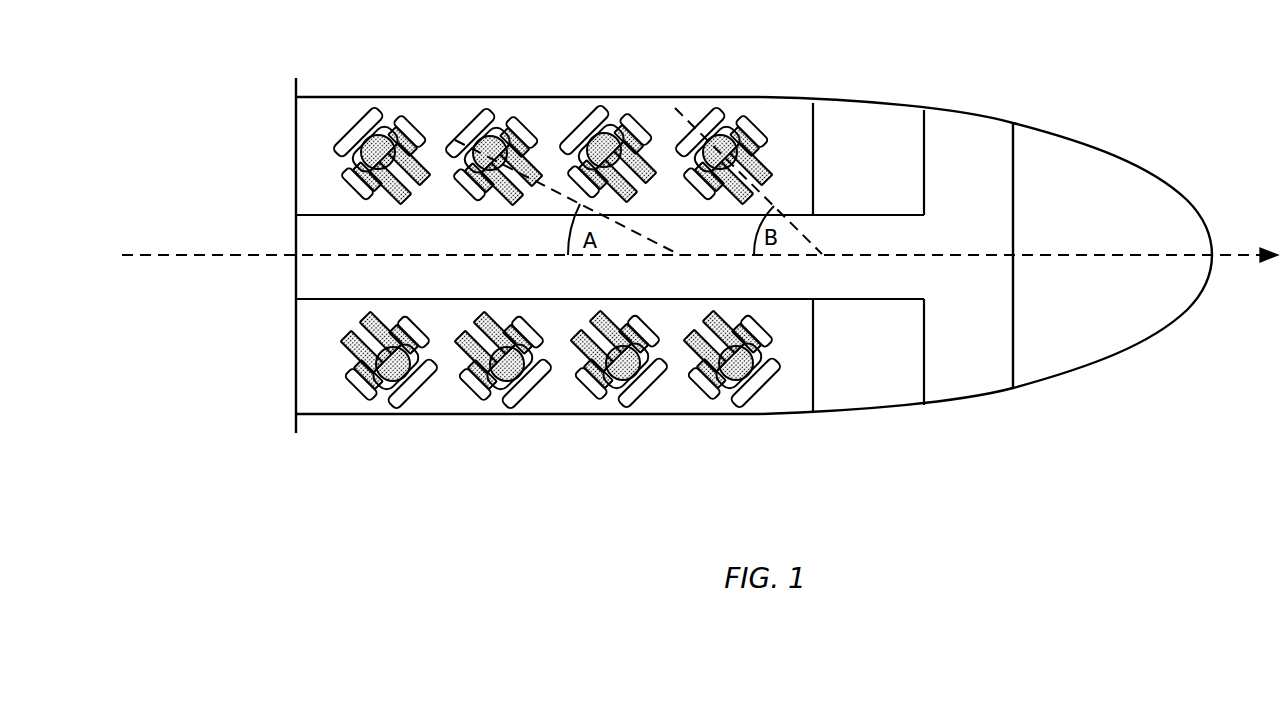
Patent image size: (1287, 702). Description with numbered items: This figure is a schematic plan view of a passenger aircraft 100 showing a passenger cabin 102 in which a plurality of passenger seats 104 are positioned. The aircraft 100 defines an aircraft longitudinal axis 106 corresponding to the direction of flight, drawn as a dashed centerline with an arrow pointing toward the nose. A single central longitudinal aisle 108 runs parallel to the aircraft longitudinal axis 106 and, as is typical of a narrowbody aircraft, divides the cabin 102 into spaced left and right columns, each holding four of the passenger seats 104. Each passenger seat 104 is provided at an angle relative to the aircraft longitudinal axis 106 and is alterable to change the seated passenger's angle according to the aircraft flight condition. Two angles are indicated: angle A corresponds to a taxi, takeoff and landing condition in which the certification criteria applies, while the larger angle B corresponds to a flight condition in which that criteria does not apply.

The passenger aircraft 100 is at (979, 114).
The passenger cabin 102 is at (334, 97).
The passenger seat 104 is at (403, 123).
The aircraft longitudinal axis 106 is at (1218, 254).
The longitudinal aisle 108 is at (317, 273).